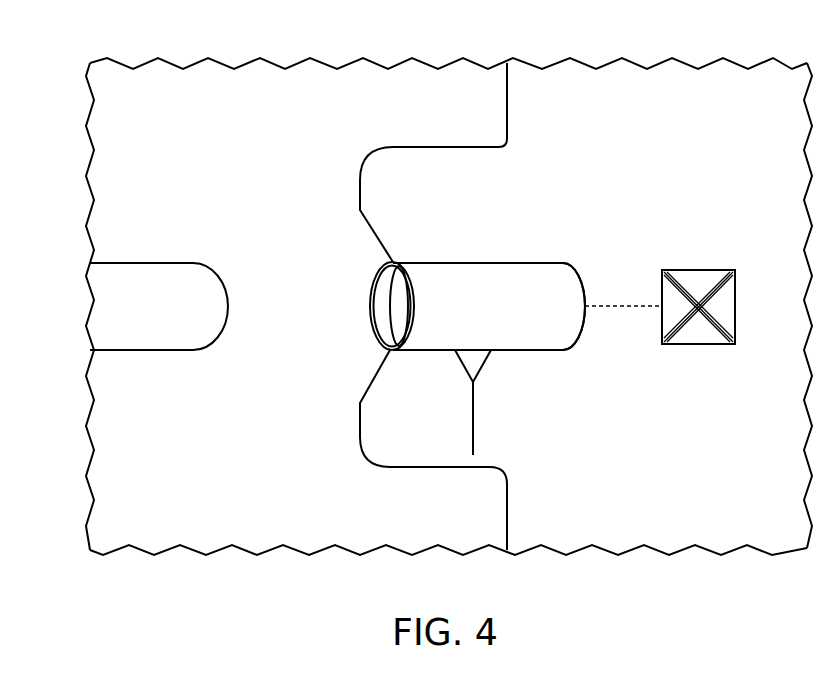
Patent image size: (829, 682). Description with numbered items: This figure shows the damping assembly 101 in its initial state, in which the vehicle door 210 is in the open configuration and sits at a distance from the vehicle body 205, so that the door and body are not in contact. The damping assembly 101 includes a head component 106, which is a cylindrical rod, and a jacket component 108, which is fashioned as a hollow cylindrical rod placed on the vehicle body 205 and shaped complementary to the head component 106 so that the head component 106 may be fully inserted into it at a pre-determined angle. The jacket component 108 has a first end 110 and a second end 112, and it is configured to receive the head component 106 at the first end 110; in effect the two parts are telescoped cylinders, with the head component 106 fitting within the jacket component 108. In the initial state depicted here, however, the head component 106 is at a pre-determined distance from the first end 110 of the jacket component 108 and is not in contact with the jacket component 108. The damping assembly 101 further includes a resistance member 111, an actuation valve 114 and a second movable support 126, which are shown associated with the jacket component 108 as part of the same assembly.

The damping assembly 101 is at (133, 238).
The head component 106 is at (175, 262).
The jacket component 108 is at (425, 262).
The first end 110 is at (377, 276).
The resistance member 111 is at (388, 305).
The second end 112 is at (557, 262).
The actuation valve 114 is at (697, 270).
The second movable support 126 is at (476, 415).
The vehicle body 205 is at (573, 81).
The vehicle door 210 is at (88, 160).